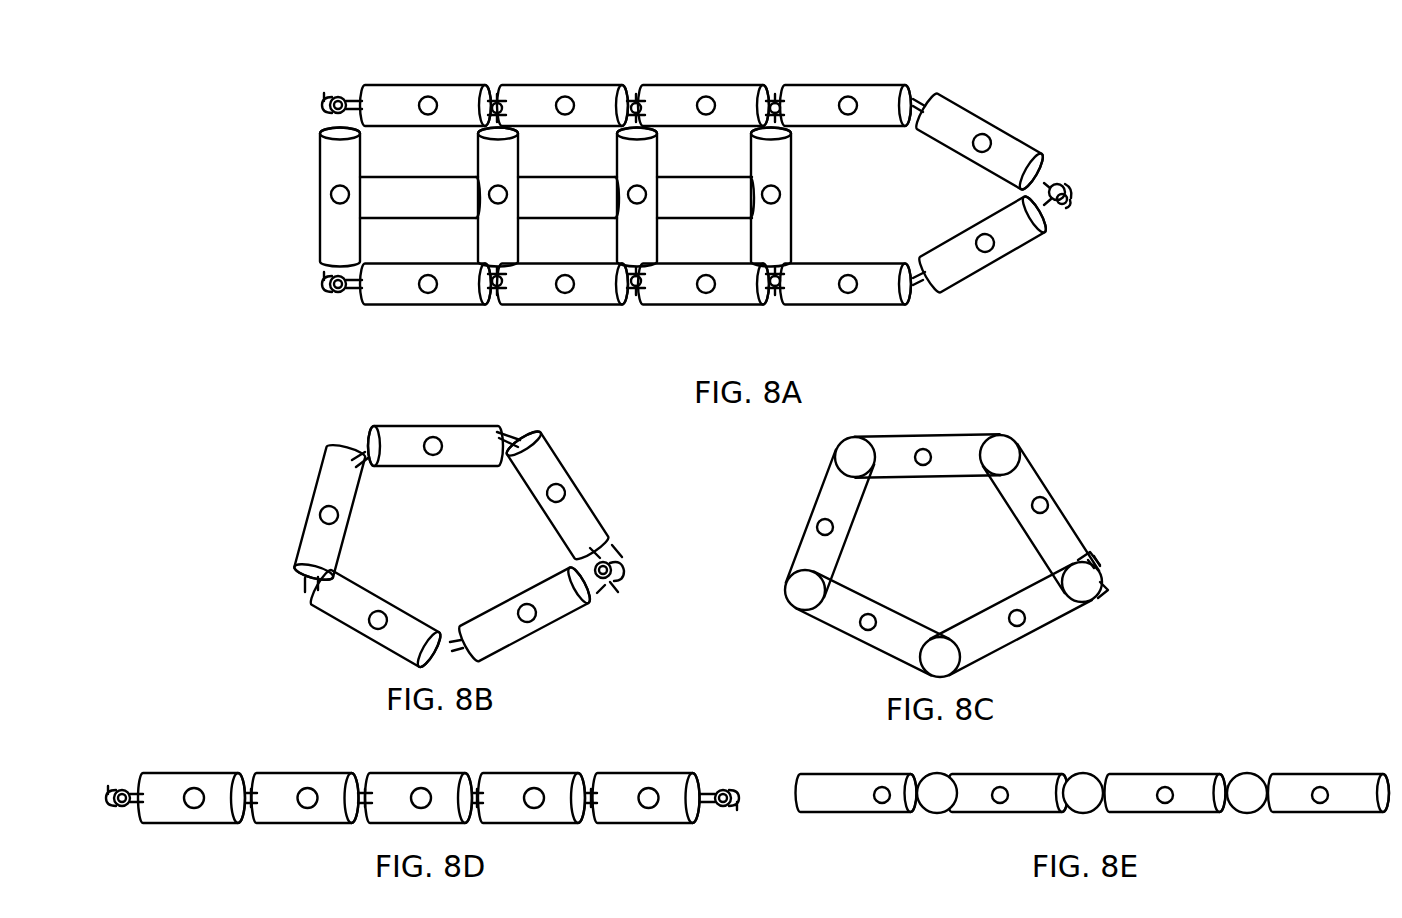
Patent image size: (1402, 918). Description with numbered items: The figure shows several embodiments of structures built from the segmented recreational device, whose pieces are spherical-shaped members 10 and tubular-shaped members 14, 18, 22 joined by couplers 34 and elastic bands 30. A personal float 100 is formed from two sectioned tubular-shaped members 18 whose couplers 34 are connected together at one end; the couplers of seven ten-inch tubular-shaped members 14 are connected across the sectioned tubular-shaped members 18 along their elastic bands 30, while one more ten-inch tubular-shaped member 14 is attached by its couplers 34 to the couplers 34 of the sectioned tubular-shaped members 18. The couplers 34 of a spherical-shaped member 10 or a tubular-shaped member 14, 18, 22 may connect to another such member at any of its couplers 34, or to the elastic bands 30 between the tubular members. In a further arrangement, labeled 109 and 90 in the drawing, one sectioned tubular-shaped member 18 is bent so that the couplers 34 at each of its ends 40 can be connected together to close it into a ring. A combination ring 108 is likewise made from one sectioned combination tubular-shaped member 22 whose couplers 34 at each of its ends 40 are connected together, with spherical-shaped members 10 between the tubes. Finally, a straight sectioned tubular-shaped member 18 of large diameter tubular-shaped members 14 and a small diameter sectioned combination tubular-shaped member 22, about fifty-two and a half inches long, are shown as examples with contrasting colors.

In FIG. 8C, the spherical-shaped member 10 is at (943, 556).
In FIG. 8E, the spherical-shaped member 10 is at (1247, 776).
In FIG. 8A, the tubular-shaped member 14 is at (785, 180).
In FIG. 8D, the tubular-shaped member 14 is at (552, 773).
In FIG. 8E, the tubular-shaped member 14 is at (1283, 775).
In FIG. 8A, the sectioned tubular-shaped member 18 is at (740, 73).
In FIG. 8B, the sectioned tubular-shaped member 18 is at (300, 492).
In FIG. 8D, the sectioned tubular-shaped member 18 is at (662, 742).
In FIG. 8C, the sectioned combination tubular-shaped member 22 is at (930, 432).
In FIG. 8E, the sectioned combination tubular-shaped member 22 is at (1332, 752).
In FIG. 8A, the elastic band 30 is at (640, 100).
In FIG. 8A, the coupler 34 is at (1063, 184).
In FIG. 8B, the coupler 34 is at (628, 568).
In FIG. 8C, the coupler 34 is at (1090, 562).
In FIG. 8B, the end 40 is at (612, 542).
In FIG. 8C, the end 40 is at (1097, 548).
In FIG. 8B, the folded configuration 90 is at (588, 478).
In FIG. 8A, the personal float 100 is at (370, 58).
In FIG. 8C, the combination ring 108 is at (1080, 460).
In FIG. 8B, the open configuration 109 is at (292, 440).